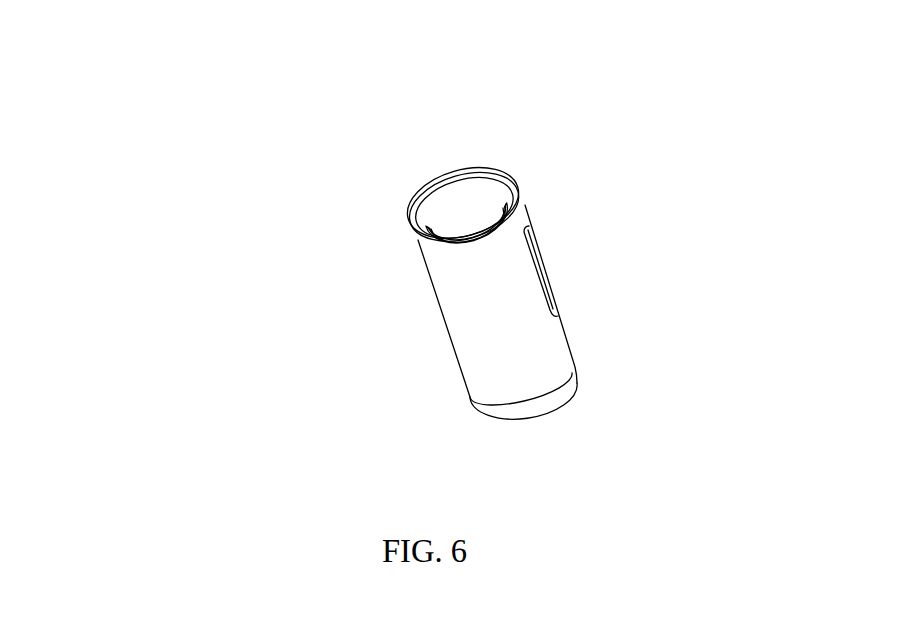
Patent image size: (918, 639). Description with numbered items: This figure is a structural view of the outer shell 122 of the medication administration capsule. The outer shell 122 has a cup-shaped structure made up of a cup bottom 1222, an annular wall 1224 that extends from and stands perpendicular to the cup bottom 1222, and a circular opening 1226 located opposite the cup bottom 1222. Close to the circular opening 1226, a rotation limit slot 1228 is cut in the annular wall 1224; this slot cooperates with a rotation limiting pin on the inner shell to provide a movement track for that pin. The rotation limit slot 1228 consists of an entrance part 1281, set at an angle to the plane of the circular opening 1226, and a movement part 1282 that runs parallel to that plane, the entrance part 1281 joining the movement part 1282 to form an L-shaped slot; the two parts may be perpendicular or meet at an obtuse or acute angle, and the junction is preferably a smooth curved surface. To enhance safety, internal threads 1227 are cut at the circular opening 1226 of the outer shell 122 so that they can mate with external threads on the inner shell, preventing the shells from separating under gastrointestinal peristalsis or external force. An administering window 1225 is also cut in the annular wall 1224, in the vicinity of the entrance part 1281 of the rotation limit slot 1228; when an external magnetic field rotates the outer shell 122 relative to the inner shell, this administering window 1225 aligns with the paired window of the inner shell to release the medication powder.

The outer shell 122 is at (553, 70).
The cup bottom 1222 is at (566, 375).
The annular wall 1224 is at (487, 363).
The administering window 1225 is at (597, 232).
The circular opening 1226 is at (490, 202).
The internal threads 1227 is at (478, 168).
The rotation limit slot 1228 is at (462, 227).
The entrance part 1281 is at (422, 223).
The movement part 1282 is at (470, 248).